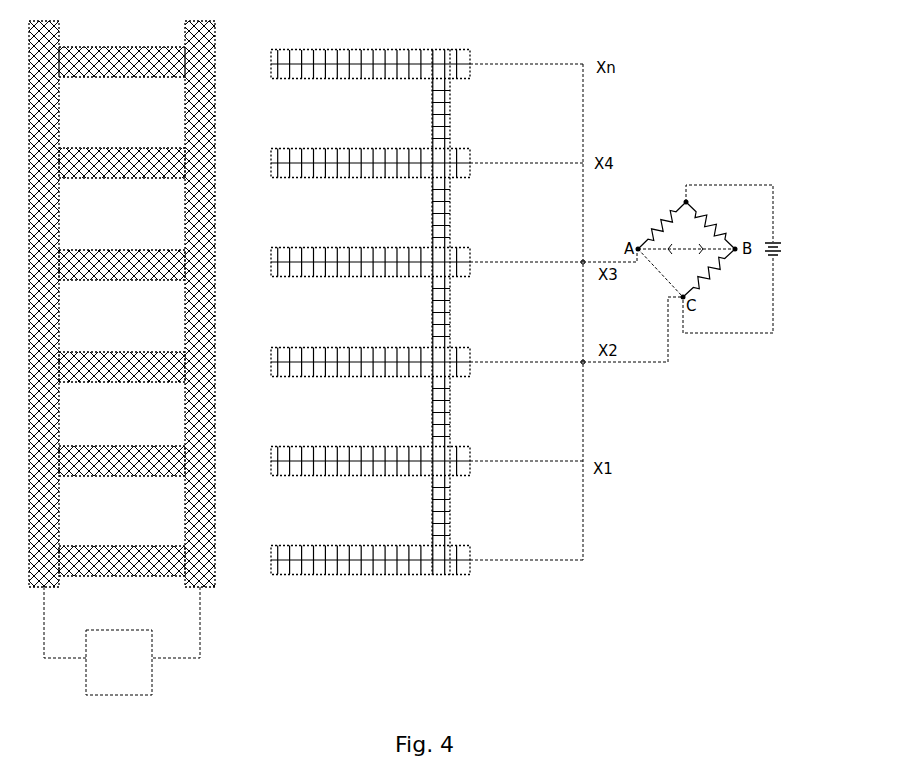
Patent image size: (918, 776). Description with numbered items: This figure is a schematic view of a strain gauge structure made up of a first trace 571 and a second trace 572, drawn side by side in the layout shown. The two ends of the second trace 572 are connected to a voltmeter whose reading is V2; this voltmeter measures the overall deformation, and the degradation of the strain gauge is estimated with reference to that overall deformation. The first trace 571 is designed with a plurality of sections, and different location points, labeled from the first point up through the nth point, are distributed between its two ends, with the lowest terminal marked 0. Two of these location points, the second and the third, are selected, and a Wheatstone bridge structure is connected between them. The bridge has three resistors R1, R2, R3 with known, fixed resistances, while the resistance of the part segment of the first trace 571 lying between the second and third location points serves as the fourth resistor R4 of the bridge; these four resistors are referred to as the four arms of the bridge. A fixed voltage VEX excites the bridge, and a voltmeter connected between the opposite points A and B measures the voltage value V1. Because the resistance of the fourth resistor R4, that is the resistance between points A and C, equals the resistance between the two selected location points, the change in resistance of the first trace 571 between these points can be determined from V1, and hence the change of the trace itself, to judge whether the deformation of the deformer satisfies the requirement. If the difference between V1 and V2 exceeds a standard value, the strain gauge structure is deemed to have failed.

The first trace 571 is at (412, 52).
The second trace 572 is at (203, 33).
The voltmeter reading V2 is at (122, 641).
The measured voltage value V1 is at (686, 249).
The first resistor R1 is at (712, 273).
The second resistor R2 is at (710, 225).
The third resistor R3 is at (659, 225).
The fourth resistor R4 is at (660, 273).
The fixed voltage VEX is at (788, 253).
The ground terminal 0 is at (540, 560).